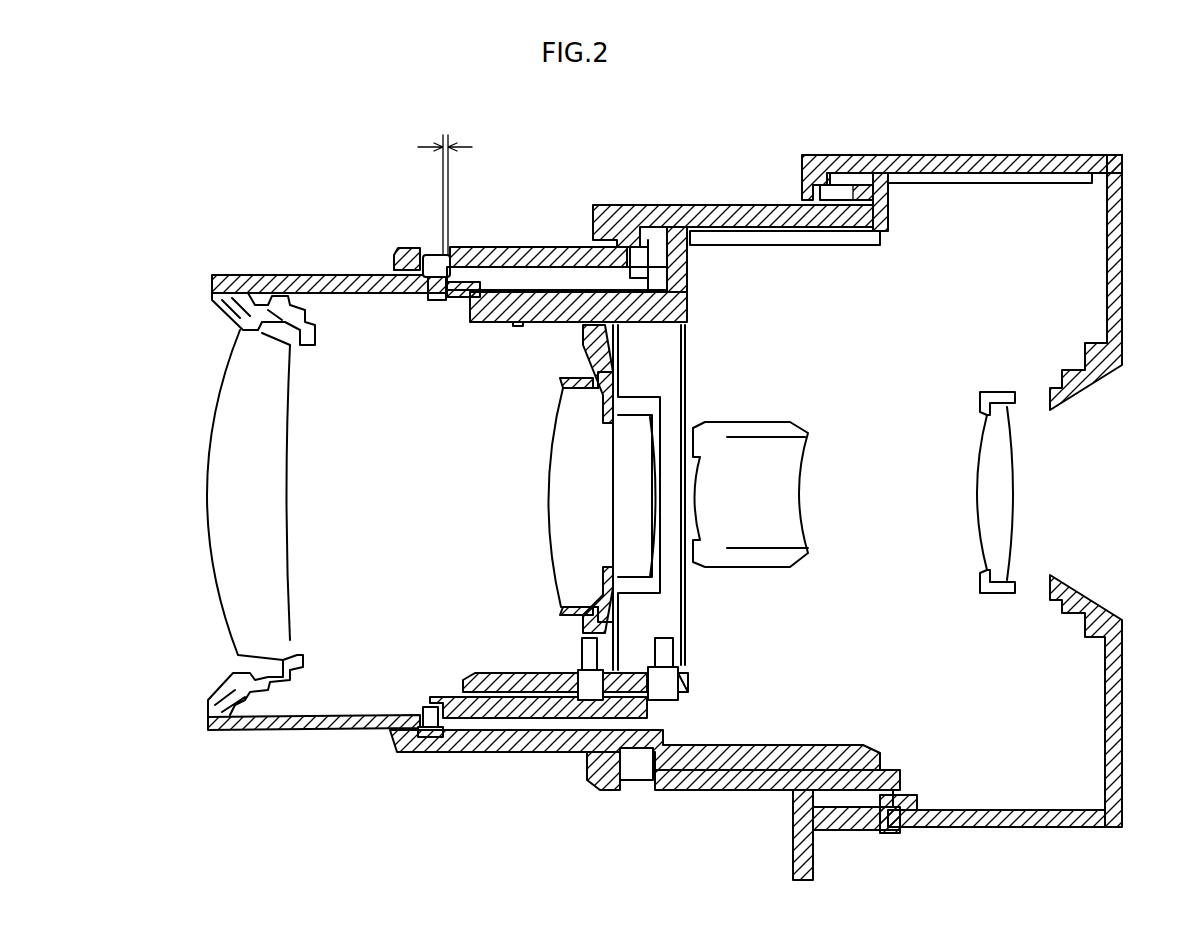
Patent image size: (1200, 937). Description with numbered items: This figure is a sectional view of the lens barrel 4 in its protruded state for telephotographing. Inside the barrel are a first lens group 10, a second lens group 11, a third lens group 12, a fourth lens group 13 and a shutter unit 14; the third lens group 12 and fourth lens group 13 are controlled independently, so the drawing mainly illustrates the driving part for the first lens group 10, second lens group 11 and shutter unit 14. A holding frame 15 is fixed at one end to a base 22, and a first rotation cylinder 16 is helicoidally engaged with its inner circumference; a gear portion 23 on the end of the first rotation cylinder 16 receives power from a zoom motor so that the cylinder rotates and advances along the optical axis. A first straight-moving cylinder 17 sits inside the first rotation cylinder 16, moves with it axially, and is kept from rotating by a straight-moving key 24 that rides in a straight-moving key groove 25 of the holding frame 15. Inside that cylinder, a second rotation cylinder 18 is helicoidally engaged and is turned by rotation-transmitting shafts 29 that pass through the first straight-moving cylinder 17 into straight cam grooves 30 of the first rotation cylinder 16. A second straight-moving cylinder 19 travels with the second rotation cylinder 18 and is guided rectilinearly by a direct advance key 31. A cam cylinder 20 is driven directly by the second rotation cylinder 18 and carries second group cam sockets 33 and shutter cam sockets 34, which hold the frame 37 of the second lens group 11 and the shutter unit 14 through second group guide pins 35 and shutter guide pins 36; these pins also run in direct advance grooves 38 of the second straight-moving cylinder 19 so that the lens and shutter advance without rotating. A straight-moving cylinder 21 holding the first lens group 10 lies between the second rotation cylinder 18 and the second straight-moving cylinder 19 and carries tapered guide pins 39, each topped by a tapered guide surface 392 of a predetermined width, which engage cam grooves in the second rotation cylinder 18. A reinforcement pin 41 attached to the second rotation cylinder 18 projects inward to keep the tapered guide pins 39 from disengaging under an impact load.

The lens barrel 4 is at (578, 155).
The first lens group 10 is at (212, 405).
The second lens group 11 is at (550, 455).
The third lens group 12 is at (795, 485).
The fourth lens group 13 is at (977, 472).
The shutter unit 14 is at (683, 380).
The holding frame 15 is at (943, 157).
The first rotation cylinder 16 is at (655, 205).
The first straight-moving cylinder 17 is at (882, 245).
The second rotation cylinder 18 is at (505, 247).
The second straight-moving cylinder 19 is at (440, 300).
The cam cylinder 20 is at (690, 310).
The straight-moving cylinder 21 is at (298, 275).
The base 22 is at (1122, 230).
The gear portion 23 is at (855, 180).
The straight-moving key 24 is at (893, 200).
The straight-moving key groove 25 is at (977, 184).
The rotation-transmitting shaft 29 is at (608, 765).
The straight cam groove 30 is at (635, 772).
The direct advance key 31 is at (650, 737).
The second group cam socket 33 is at (545, 695).
The shutter cam socket 34 is at (688, 683).
The second group guide pin 35 is at (590, 692).
The shutter guide pin 36 is at (668, 670).
The frame of the second lens group 37 is at (585, 358).
The direct advance groove 38 is at (507, 702).
The tapered guide pin 39 is at (437, 260).
The reinforcement pin 41 is at (618, 215).
The tapered guide surface 392 is at (400, 255).